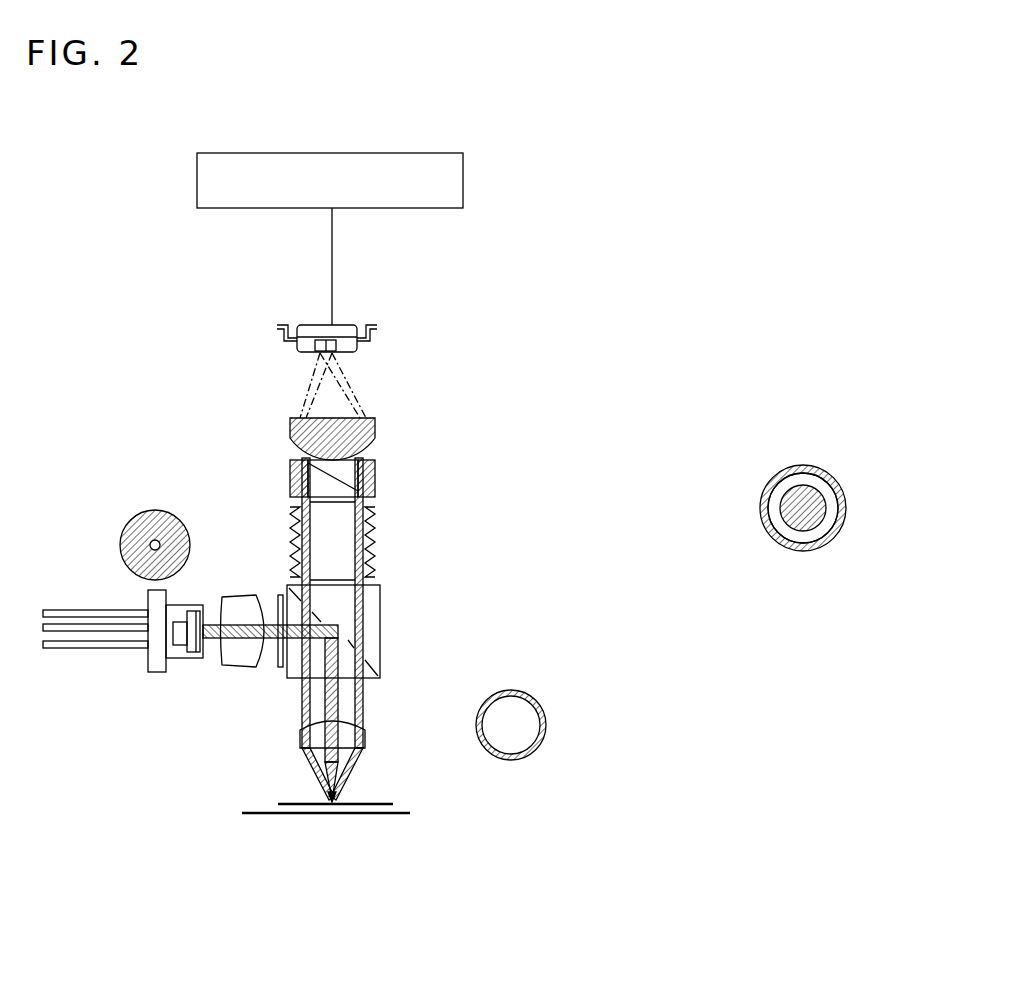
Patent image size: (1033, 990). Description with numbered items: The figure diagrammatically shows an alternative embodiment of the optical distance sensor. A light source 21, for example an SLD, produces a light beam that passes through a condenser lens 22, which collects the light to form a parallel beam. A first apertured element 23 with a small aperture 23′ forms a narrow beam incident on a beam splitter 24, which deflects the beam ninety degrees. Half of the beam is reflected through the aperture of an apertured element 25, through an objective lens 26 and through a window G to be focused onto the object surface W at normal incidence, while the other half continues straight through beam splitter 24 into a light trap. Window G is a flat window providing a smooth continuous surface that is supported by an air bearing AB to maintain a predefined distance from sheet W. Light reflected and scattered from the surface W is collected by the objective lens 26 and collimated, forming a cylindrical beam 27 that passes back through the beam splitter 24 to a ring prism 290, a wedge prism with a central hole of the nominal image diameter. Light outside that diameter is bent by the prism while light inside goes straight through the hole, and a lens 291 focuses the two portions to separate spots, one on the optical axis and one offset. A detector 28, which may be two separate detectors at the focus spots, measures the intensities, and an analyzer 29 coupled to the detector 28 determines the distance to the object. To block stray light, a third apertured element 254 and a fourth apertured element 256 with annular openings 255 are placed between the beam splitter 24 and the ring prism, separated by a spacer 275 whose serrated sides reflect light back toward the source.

The analyzer 29 is at (474, 187).
The detector 28 is at (350, 327).
The lens 291 is at (378, 422).
The ring prism 290 is at (378, 492).
The fourth apertured element 256 is at (378, 505).
The third apertured element 254 is at (378, 575).
The annular openings 255 is at (797, 545).
The spacer 275 is at (378, 545).
The beam splitter 24 is at (380, 652).
The cylindrical beam 27 is at (302, 713).
The objective lens 26 is at (368, 739).
The apertured element 25 is at (372, 727).
The light source 21 is at (173, 674).
The condenser lens 22 is at (240, 664).
The first apertured element 23 is at (275, 587).
The aperture 23′ is at (152, 540).
The window G is at (355, 803).
The sheet W is at (235, 823).
The air bearing AB is at (400, 808).